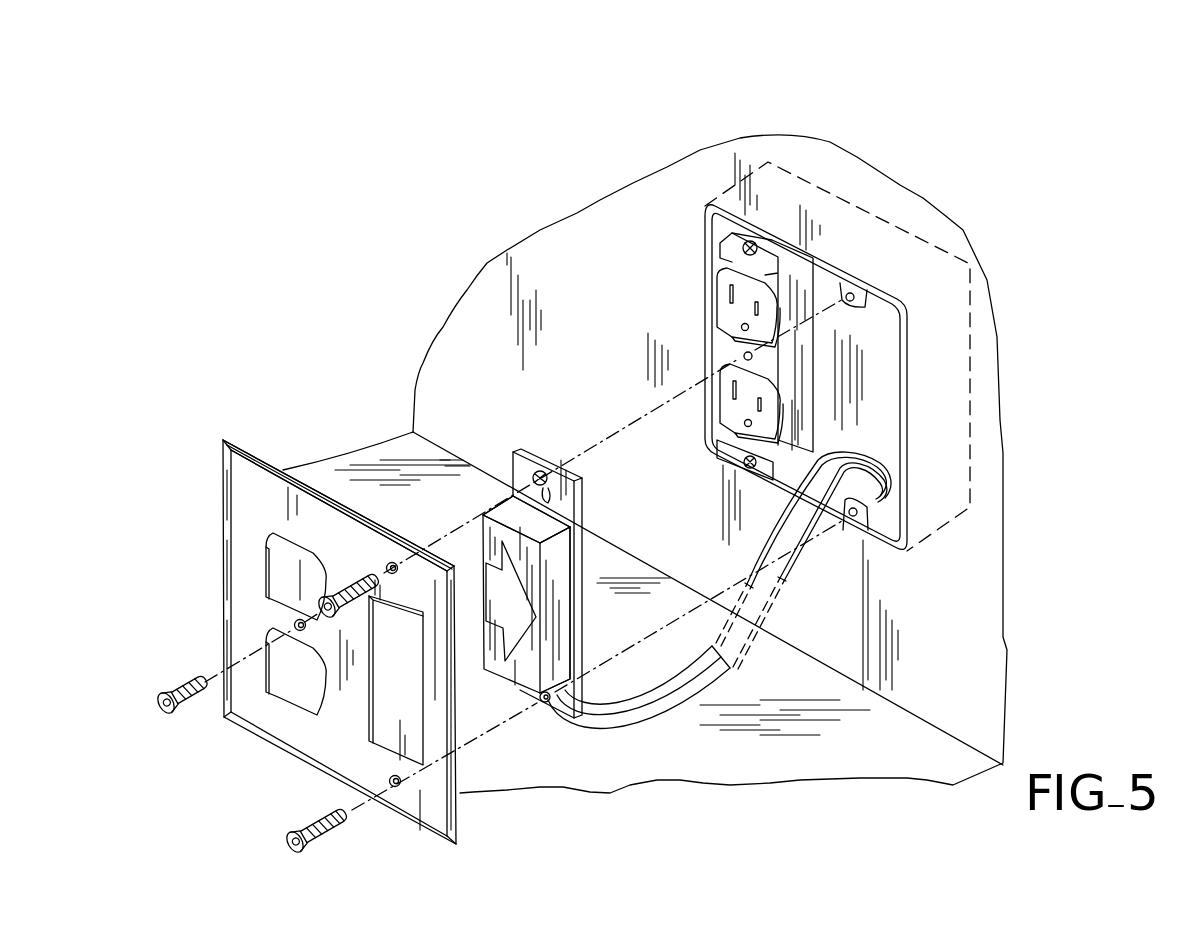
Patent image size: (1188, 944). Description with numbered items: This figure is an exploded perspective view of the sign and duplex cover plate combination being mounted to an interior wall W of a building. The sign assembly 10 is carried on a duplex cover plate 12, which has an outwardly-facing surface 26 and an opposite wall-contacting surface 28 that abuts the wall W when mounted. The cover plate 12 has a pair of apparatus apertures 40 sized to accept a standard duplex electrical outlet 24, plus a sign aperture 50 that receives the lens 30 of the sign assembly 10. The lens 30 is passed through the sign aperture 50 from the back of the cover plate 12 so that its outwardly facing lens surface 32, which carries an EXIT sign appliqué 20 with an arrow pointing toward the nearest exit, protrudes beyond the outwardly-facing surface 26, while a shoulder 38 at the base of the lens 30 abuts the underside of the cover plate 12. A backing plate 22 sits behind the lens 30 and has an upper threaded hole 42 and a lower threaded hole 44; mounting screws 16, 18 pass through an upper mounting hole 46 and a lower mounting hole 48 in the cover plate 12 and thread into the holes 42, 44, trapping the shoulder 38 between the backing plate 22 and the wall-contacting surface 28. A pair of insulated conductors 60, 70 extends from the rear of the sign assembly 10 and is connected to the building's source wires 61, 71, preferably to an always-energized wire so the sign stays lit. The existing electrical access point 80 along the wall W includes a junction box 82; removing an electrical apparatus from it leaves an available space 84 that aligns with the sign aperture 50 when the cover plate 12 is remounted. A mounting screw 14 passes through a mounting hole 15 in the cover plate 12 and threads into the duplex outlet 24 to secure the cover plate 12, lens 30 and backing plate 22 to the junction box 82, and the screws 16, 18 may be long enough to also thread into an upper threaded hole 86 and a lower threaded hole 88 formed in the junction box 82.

The sign assembly 10 is at (290, 397).
The duplex cover plate 12 is at (234, 486).
The mounting screw 14 is at (172, 684).
The mounting hole 15 is at (291, 617).
The mounting screw 16 is at (343, 595).
The mounting screw 18 is at (302, 831).
The sign appliqué 20 is at (510, 640).
The backing plate 22 is at (583, 508).
The duplex electrical outlet 24 is at (730, 307).
The outwardly-facing surface 26 is at (270, 493).
The wall-contacting surface 28 is at (253, 453).
The lens 30 is at (491, 508).
The outwardly facing lens surface 32 is at (555, 578).
The shoulder 38 is at (507, 497).
The apparatus apertures 40 is at (289, 572).
The upper threaded hole 42 is at (525, 462).
The lower threaded hole 44 is at (542, 703).
The upper mounting hole 46 is at (385, 563).
The lower mounting hole 48 is at (397, 790).
The sign aperture 50 is at (395, 694).
The insulated conductor 60 is at (647, 722).
The source wire 61 is at (783, 575).
The insulated conductor 70 is at (653, 697).
The source wire 71 is at (755, 556).
The electrical access point 80 is at (638, 247).
The junction box 82 is at (907, 405).
The available space 84 is at (887, 350).
The upper threaded hole 86 is at (847, 293).
The lower threaded hole 88 is at (848, 518).
The wall W is at (963, 577).